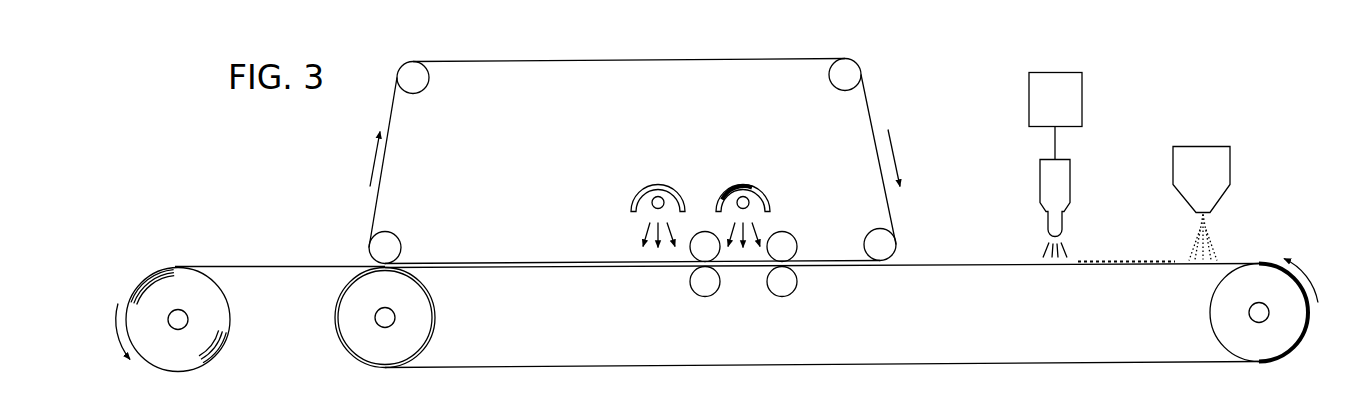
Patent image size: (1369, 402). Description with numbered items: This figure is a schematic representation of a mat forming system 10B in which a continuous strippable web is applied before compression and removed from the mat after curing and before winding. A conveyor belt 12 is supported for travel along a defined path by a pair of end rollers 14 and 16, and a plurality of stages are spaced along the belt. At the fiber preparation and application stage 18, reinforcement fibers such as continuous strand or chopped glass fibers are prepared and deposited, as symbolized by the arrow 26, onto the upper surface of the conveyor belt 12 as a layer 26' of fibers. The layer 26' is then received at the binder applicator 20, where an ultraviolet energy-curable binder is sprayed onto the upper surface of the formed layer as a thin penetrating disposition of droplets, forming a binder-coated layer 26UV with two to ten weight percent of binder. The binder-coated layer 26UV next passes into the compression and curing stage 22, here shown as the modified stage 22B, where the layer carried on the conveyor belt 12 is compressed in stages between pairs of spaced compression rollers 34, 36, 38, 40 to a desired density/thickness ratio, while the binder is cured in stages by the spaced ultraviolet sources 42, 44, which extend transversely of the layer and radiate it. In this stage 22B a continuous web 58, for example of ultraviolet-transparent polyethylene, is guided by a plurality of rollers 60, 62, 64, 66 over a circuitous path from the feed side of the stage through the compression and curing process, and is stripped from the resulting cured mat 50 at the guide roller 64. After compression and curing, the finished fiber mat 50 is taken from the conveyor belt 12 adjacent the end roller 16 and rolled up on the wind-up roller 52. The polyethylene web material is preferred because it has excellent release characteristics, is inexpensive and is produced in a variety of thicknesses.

The mat forming system 10B is at (276, 198).
The conveyor belt 12 is at (1014, 266).
The end roller 14 is at (1259, 349).
The end roller 16 is at (385, 364).
The fiber preparation and application stage 18 is at (1224, 184).
The binder applicator 20 is at (1024, 158).
The compression and curing stage 22 is at (705, 193).
The compression and curing stage 22B is at (654, 147).
The arrow indicating fiber deposition 26 is at (1225, 238).
The layer of fibers 26' is at (1126, 239).
The binder-coated layer 26UV is at (992, 258).
The compression roller 34 is at (790, 241).
The compression roller 36 is at (790, 290).
The compression roller 38 is at (697, 253).
The compression roller 40 is at (712, 290).
The ultraviolet source 42 is at (738, 188).
The ultraviolet source 44 is at (640, 190).
The finished fiber mat 50 is at (288, 266).
The wind-up roller 52 is at (210, 359).
The continuous web 58 is at (752, 58).
The guide roller 60 is at (858, 80).
The guide roller 62 is at (888, 252).
The guide roller 64 is at (396, 243).
The guide roller 66 is at (418, 86).